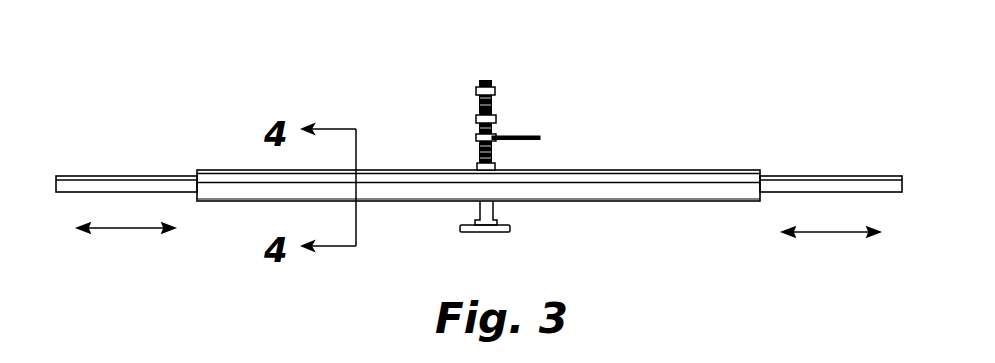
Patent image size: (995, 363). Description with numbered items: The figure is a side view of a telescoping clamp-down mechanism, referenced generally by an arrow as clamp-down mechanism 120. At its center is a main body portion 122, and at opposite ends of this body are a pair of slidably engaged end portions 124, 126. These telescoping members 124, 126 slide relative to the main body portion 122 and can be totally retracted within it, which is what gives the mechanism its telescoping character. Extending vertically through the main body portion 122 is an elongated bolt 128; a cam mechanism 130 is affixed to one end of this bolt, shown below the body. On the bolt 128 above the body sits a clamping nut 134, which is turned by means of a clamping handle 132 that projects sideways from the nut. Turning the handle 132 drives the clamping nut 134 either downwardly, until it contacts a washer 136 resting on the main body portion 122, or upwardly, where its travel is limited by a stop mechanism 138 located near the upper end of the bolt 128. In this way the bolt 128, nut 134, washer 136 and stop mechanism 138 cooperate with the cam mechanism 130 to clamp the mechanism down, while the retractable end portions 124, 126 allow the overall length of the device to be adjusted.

The clamp-down mechanism 120 is at (572, 111).
The main body portion 122 is at (668, 170).
The end portion 124 is at (815, 176).
The end portion 126 is at (139, 175).
The elongated bolt 128 is at (478, 103).
The cam mechanism 130 is at (495, 233).
The clamping handle 132 is at (524, 135).
The clamping nut 134 is at (476, 137).
The washer 136 is at (497, 167).
The stop mechanism 138 is at (476, 91).